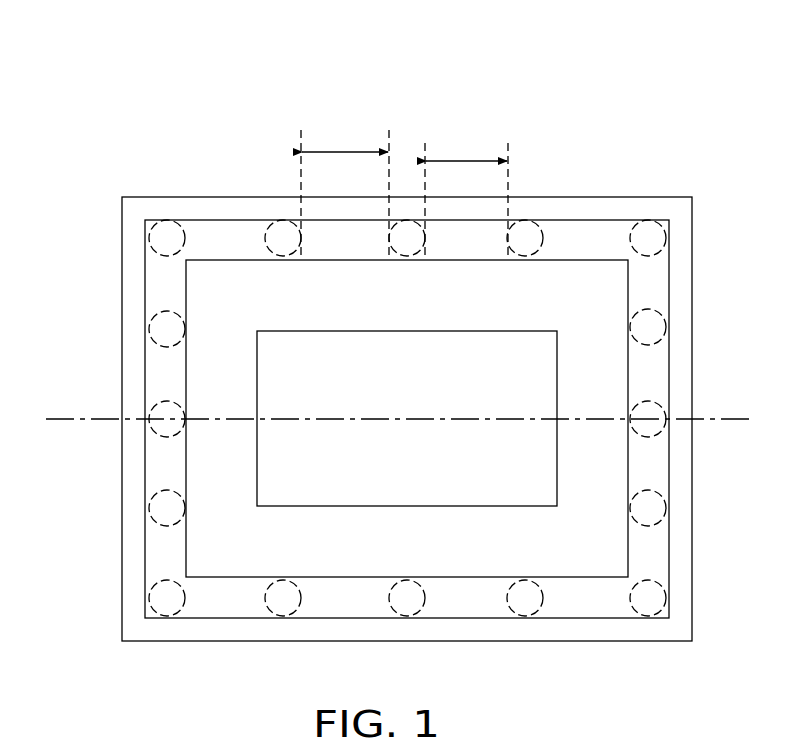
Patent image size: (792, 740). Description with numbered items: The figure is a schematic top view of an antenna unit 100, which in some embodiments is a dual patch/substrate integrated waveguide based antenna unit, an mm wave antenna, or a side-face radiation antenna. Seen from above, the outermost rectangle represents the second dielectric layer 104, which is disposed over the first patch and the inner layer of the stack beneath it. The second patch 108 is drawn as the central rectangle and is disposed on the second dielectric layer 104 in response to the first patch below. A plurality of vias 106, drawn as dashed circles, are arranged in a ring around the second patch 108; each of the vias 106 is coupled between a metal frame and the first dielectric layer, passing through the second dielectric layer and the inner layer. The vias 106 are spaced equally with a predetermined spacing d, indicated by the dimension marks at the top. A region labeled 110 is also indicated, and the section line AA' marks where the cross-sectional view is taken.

The antenna unit 100 is at (349, 49).
The second dielectric layer 104 is at (692, 197).
The vias 106 is at (637, 312).
The second patch 108 is at (540, 506).
The via ring region 110 is at (586, 220).